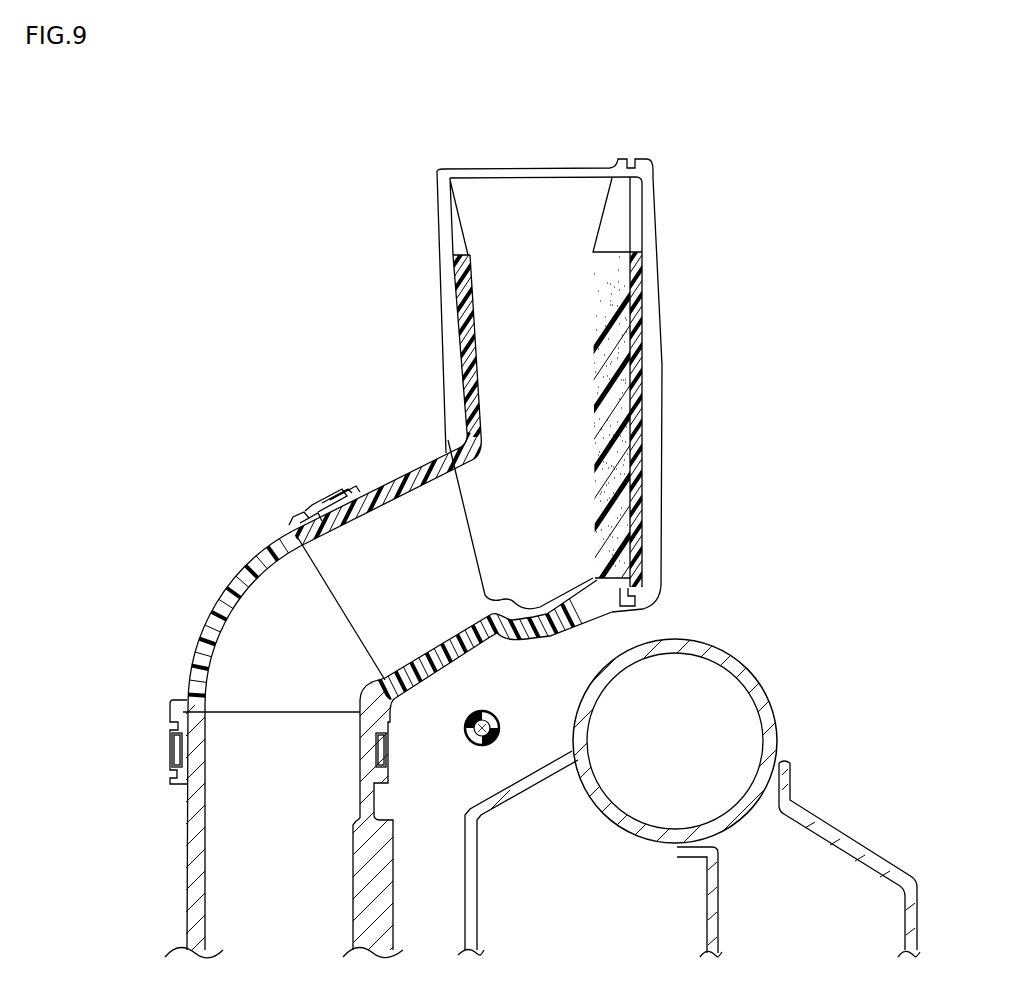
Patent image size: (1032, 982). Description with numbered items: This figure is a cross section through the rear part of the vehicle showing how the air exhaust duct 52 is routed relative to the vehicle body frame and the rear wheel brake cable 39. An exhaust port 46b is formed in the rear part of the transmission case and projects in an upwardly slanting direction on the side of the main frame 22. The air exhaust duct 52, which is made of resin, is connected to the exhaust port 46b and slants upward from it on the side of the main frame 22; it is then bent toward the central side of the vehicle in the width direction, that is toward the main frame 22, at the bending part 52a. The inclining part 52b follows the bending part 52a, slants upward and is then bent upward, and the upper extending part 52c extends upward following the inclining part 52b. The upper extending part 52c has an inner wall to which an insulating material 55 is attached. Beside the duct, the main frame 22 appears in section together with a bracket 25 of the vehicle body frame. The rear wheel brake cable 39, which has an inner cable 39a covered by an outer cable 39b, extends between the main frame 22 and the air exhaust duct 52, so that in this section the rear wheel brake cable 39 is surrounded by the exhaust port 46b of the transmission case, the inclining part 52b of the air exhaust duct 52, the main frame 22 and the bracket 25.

The main frame 22 is at (745, 668).
The bracket 25 is at (518, 790).
The rear wheel brake cable 39 is at (507, 645).
The inner cable 39a is at (500, 735).
The outer cable 39b is at (480, 711).
The exhaust port 46b is at (192, 836).
The air exhaust duct 52 is at (316, 488).
The bending part 52a is at (216, 600).
The inclining part 52b is at (390, 487).
The upper extending part 52c is at (463, 347).
The insulating material 55 is at (612, 373).